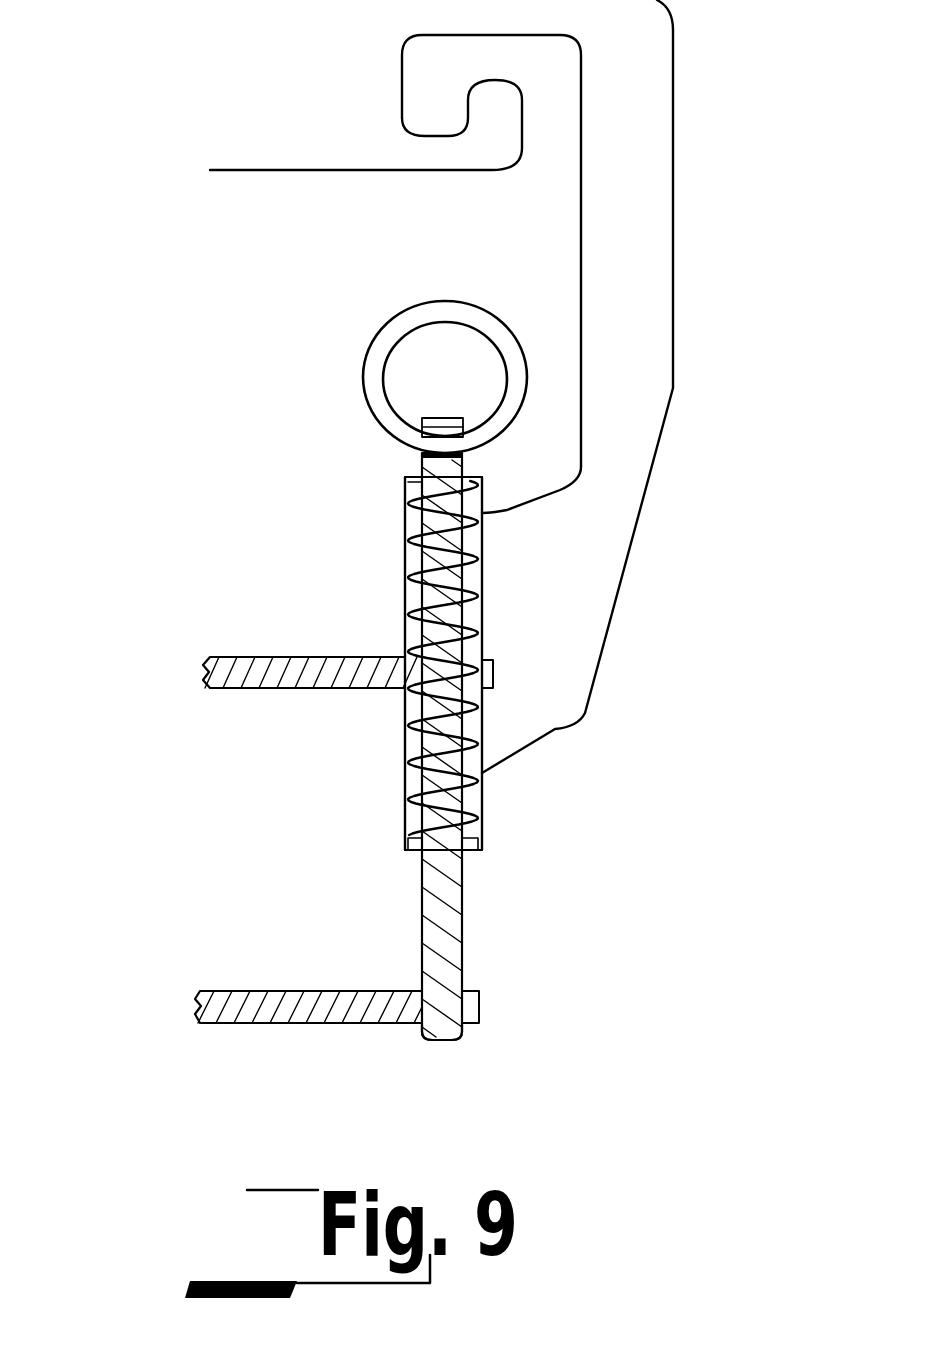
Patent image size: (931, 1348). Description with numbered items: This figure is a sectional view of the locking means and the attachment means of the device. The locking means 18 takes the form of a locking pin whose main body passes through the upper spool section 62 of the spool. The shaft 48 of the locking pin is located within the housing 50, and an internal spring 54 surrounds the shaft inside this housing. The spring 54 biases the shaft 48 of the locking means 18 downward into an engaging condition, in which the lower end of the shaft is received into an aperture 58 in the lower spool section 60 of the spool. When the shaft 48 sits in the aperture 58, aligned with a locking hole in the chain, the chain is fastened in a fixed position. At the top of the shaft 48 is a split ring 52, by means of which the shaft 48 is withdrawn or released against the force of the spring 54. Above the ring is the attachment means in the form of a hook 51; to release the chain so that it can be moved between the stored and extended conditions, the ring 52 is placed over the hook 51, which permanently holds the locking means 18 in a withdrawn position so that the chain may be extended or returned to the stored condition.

The locking means 18 is at (396, 556).
The shaft 48 is at (440, 712).
The housing 50 is at (405, 805).
The hook 51 is at (500, 137).
The split ring 52 is at (373, 384).
The spring 54 is at (420, 600).
The aperture 58 is at (462, 1027).
The lower spool section 60 is at (195, 1010).
The upper spool section 62 is at (203, 672).